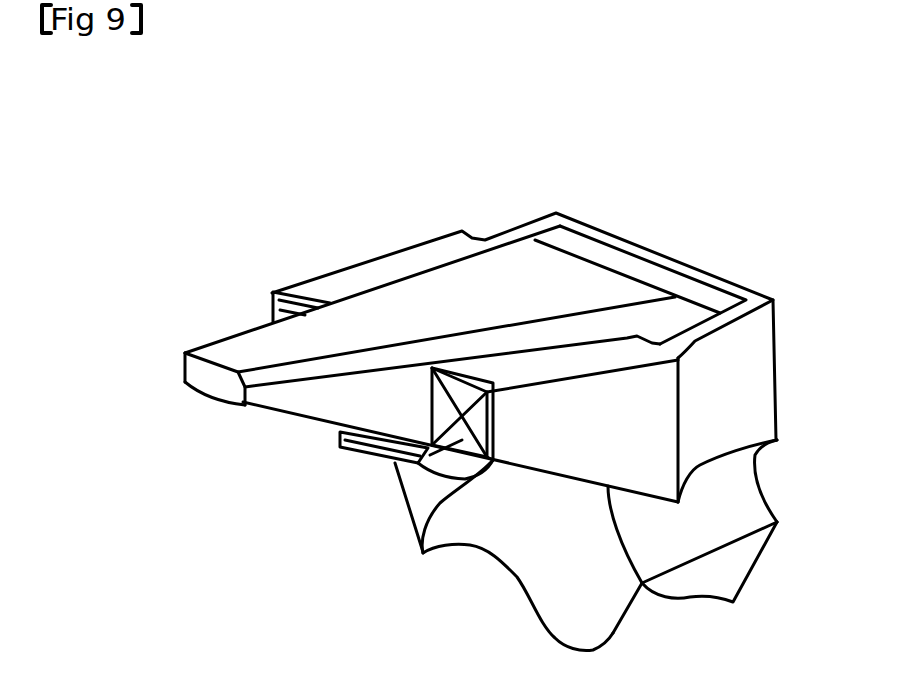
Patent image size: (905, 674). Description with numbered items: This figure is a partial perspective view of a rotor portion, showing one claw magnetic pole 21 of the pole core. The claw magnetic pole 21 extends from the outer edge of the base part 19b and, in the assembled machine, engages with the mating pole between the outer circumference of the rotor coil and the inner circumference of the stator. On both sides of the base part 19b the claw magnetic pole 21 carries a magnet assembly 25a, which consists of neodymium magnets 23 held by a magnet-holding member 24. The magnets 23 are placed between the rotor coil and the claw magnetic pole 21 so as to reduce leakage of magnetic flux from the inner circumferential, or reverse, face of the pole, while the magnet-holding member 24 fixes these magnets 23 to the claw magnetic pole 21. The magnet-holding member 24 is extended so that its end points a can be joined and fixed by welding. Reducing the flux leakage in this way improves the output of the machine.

The base part 19b is at (640, 302).
The end point a is at (657, 281).
The claw magnetic pole 21 is at (212, 378).
The neodymium magnet 23 is at (268, 313).
The magnet-holding member 24 is at (465, 470).
The magnet assembly 25a is at (325, 494).